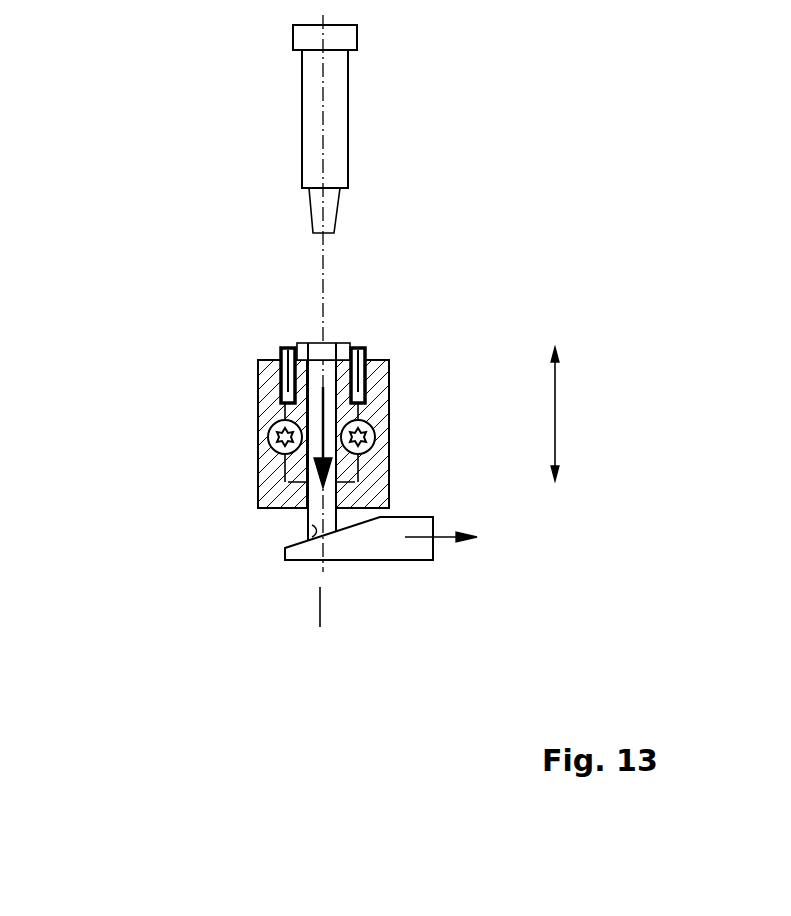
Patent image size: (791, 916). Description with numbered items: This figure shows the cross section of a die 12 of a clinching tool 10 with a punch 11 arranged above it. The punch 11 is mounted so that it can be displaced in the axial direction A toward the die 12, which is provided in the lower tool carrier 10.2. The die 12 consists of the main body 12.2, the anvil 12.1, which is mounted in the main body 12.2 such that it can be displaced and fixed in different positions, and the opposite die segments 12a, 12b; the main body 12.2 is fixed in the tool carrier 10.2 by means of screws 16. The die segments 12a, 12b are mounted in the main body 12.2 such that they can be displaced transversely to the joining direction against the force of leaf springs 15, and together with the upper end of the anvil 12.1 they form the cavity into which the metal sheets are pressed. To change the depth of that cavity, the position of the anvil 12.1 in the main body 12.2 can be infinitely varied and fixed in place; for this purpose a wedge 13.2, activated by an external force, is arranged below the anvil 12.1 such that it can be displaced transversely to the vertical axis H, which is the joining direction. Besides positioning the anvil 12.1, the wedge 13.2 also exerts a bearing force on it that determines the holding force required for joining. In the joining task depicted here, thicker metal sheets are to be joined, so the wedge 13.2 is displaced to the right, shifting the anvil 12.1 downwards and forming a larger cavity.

The clinching tool 10 is at (148, 250).
The punch 11 is at (337, 112).
The die 12 is at (369, 457).
The die segment 12a is at (293, 347).
The die segment 12b is at (343, 342).
The anvil 12.1 is at (300, 532).
The main body 12.2 is at (288, 482).
The lower tool carrier 10.2 is at (378, 480).
The wedge 13.2 is at (387, 543).
The leaf springs 15 is at (277, 367).
The screws 16 is at (260, 435).
The axial direction A is at (538, 414).
The vertical axis H is at (321, 613).